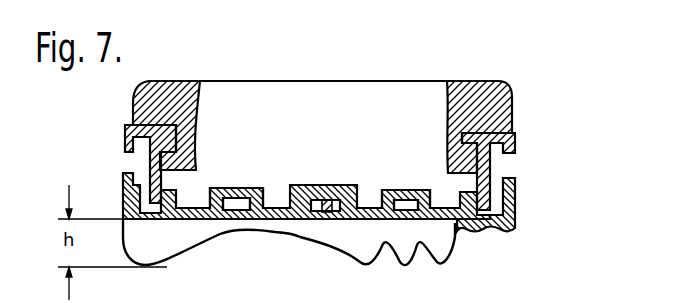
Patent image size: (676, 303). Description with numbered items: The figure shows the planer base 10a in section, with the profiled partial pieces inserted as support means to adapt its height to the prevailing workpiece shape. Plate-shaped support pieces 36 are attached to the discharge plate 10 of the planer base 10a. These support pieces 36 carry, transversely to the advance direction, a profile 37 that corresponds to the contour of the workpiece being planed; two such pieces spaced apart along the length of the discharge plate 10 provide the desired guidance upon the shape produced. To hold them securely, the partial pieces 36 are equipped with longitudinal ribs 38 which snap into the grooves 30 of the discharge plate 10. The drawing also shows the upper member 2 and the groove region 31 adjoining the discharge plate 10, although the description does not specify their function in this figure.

The panel member 2 is at (463, 95).
The longitudinal ribs 38 is at (139, 175).
The groove 31 is at (497, 163).
The grooves 30 is at (236, 204).
The discharge plate 10 is at (338, 213).
The planer base 10a is at (455, 233).
The support pieces 36 is at (430, 249).
The profile 37 is at (192, 247).